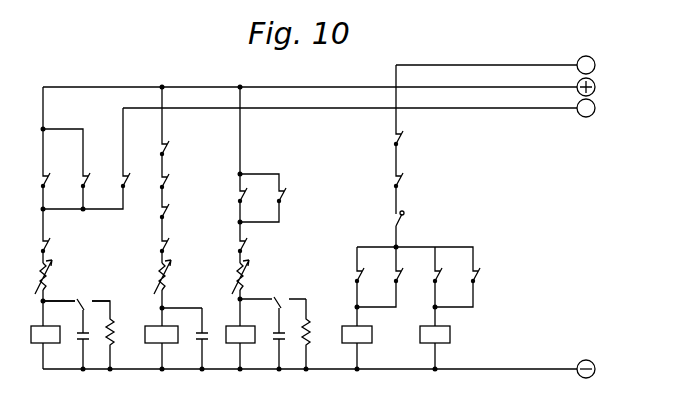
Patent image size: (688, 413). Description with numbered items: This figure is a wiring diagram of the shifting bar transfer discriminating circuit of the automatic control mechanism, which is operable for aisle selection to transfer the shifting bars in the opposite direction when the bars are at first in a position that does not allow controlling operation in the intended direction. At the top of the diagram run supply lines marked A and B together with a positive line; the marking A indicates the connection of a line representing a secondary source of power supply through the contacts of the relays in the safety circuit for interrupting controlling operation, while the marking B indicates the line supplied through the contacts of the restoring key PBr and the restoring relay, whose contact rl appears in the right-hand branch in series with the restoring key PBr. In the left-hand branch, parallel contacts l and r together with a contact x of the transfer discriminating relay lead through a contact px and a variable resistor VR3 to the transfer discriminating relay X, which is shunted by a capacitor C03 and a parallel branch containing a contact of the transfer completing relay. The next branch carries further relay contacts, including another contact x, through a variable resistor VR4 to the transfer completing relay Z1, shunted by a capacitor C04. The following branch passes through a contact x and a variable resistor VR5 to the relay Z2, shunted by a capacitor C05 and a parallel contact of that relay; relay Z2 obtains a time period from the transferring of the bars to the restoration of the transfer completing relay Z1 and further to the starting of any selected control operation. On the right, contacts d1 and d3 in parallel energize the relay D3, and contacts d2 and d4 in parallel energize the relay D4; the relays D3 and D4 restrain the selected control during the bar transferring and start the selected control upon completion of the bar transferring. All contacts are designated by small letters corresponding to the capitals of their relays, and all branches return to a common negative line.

The connection line marking A is at (586, 65).
The connection line marking B is at (586, 108).
The relay contact l is at (47, 175).
The relay contact r is at (88, 175).
The transfer discriminating relay contact x is at (190, 209).
The transfer discriminating relay X is at (45, 334).
The relay contact px is at (55, 247).
The variable resistor VR3 is at (29, 277).
The variable resistor VR4 is at (148, 277).
The variable resistor VR5 is at (226, 277).
The transfer completing relay Z1 is at (230, 235).
The timing relay Z2 is at (233, 240).
The capacitor C03 is at (74, 339).
The capacitor C04 is at (194, 338).
The capacitor C05 is at (271, 342).
The relay contact d1 is at (268, 245).
The relay contact d2 is at (307, 262).
The relay contact d3 is at (405, 272).
The relay contact d4 is at (482, 272).
The restraining relay D3 is at (357, 334).
The restraining relay D4 is at (435, 334).
The restoring relay contact rl is at (404, 182).
The restoring key PBr is at (411, 220).